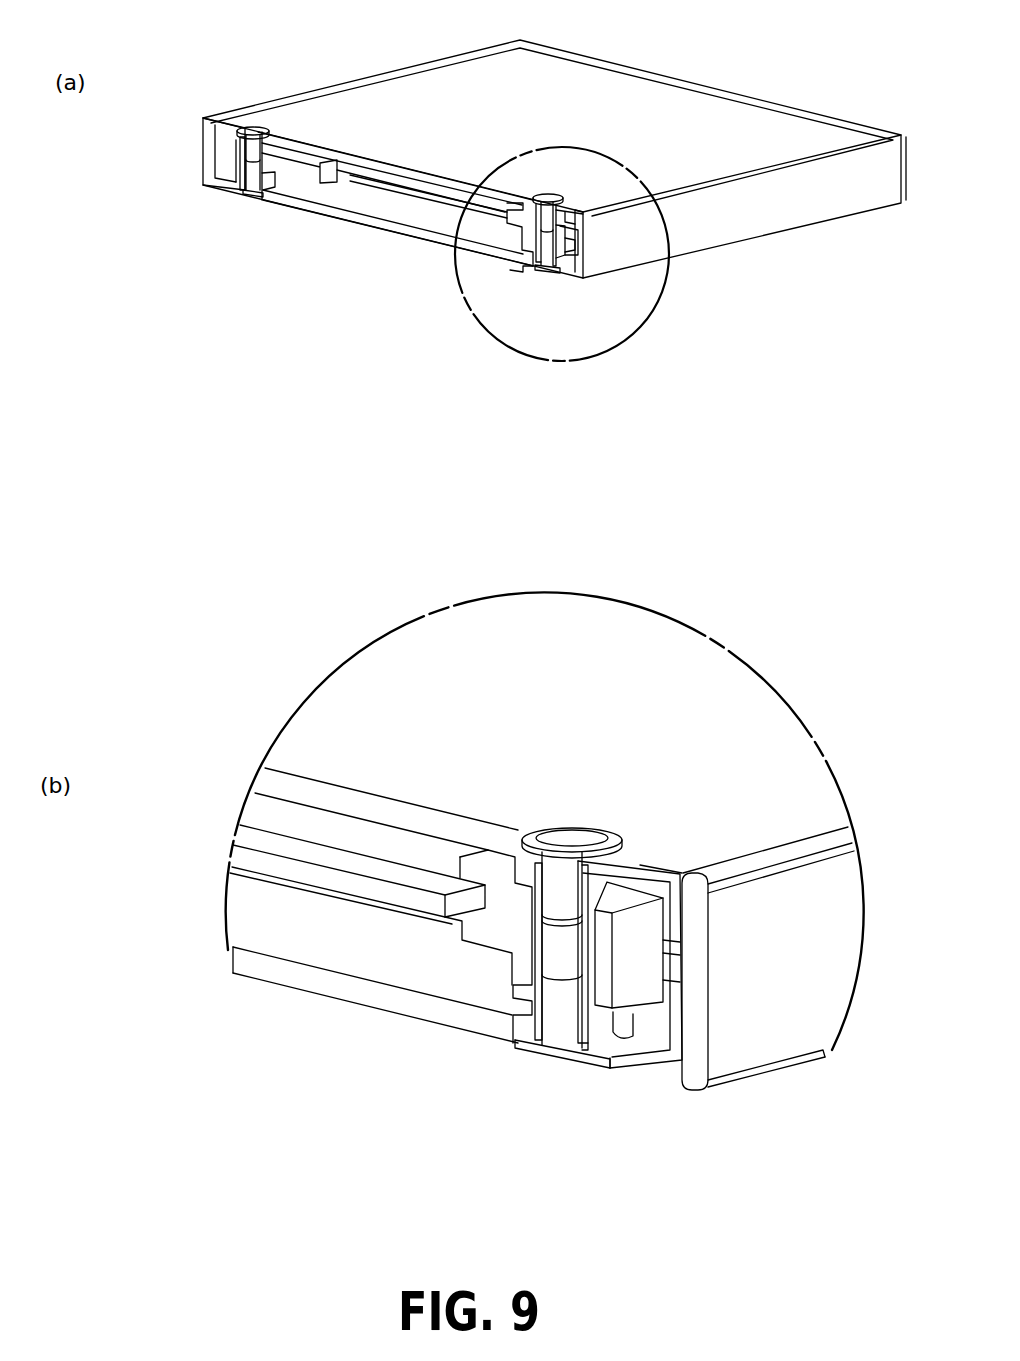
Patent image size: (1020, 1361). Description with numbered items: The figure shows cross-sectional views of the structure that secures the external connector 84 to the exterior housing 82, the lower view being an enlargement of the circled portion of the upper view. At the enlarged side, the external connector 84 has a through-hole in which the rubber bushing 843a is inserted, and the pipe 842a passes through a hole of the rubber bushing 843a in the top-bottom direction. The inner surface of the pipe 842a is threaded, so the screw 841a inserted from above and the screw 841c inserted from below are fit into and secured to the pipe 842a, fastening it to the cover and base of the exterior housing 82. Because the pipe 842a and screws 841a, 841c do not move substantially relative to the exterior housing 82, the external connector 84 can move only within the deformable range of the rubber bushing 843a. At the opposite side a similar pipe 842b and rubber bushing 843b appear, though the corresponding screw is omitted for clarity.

The exterior housing 82 is at (335, 83).
The external connector 84 is at (312, 180).
The screw 841a is at (549, 196).
The screw 841c is at (537, 265).
The pipe 842a is at (566, 235).
The pin 842b is at (250, 185).
The rubber bushing 843a is at (527, 247).
The plate 843b is at (223, 178).